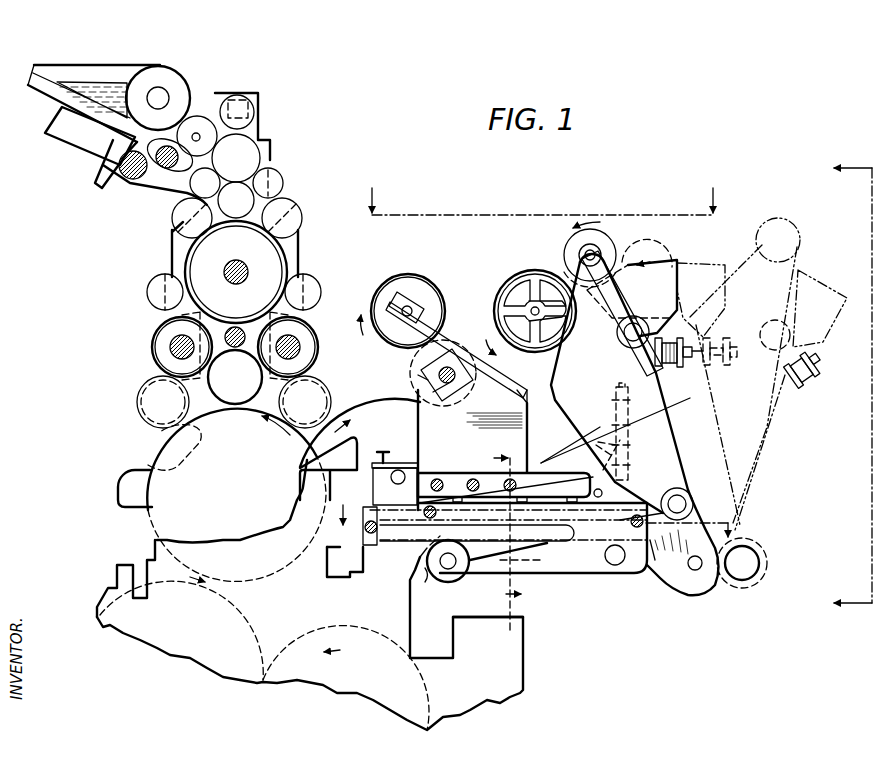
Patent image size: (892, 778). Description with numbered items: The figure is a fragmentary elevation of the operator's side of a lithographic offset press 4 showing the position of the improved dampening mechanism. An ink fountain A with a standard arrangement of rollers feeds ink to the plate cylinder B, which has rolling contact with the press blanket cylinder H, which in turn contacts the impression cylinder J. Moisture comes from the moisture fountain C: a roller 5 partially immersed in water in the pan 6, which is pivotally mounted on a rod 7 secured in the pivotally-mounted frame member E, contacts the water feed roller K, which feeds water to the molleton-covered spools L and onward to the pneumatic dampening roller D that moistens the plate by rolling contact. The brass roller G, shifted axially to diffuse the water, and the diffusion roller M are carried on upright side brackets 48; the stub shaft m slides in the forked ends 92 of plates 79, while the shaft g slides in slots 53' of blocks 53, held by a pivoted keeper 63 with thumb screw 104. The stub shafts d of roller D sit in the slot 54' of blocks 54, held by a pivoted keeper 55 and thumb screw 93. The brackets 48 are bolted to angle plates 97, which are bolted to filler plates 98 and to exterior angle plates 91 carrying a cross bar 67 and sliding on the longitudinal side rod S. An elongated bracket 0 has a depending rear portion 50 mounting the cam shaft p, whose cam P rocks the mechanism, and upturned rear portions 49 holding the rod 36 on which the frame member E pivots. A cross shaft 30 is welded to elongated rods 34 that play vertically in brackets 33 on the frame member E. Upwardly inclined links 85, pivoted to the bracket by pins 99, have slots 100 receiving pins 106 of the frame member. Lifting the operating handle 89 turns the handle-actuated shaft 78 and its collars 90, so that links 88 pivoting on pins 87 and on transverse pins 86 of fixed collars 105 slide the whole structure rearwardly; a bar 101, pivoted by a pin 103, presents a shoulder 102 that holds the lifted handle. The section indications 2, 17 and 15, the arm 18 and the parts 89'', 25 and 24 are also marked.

The ink fountain A is at (90, 66).
The lithographic offset press 4 is at (262, 170).
The plate cylinder B is at (150, 455).
The press blanket cylinder H is at (190, 653).
The press impression or printing cylinder J is at (357, 690).
The water pan 6 is at (848, 330).
The section line 2- 2 is at (841, 387).
The cam / section line 17- 17 is at (617, 233).
The section line 15- 15 is at (542, 526).
The diffusion roller M is at (407, 275).
The stub shaft m is at (385, 300).
The forked ends 92 is at (420, 308).
The plates 79 is at (432, 340).
The pivoted keeper 63 is at (433, 352).
The molleton-covered wheels or spools L is at (502, 275).
The wheel arm 18 is at (534, 306).
The brass roller G is at (412, 370).
The thumb screw 104 is at (422, 380).
The blocks 53 is at (454, 381).
The slots 53' is at (439, 405).
The shaft g is at (456, 378).
The upright side brackets 48 is at (527, 403).
The pneumatic dampening roller D is at (365, 402).
The thumb screw 93 is at (383, 448).
The pivoted keeper 55 is at (357, 456).
The slot 54' is at (382, 474).
The blocks 54 is at (381, 486).
The stub shafts d is at (399, 468).
The angle plates 97 is at (452, 472).
The pins 99 is at (437, 508).
The filler plates 98 is at (580, 505).
The bar 101 is at (575, 545).
The longitudinal exterior angle plates 91 is at (590, 573).
The cross bar 67 is at (615, 565).
The elongated longitudinal brackets 0 is at (656, 566).
The depending rear end portion 50 is at (670, 572).
The handle-actuated shaft 78 is at (447, 572).
The pins 87 is at (465, 575).
The links 88 is at (422, 552).
The link 89'' is at (508, 559).
The operating handle 89 is at (526, 577).
The collars 90 is at (510, 600).
The longitudinal side rod S is at (392, 547).
The shoulder 102 is at (425, 582).
The fixed collars 105 is at (370, 551).
The transverse pins 86 is at (327, 556).
The cross shaft 30 is at (665, 462).
The water feed roller K is at (573, 247).
The roller 5 is at (647, 260).
The rod 7 is at (625, 335).
The moisture fountain C is at (678, 270).
The adjusting screw 25 is at (682, 366).
The screw stem 24 is at (703, 362).
The pivotally-mounted frame member E is at (667, 443).
The brackets 33 is at (648, 435).
The upwardly inclined links 85 is at (552, 462).
The elongated rods 34 is at (630, 458).
The slots 100 is at (624, 420).
The pins 106 is at (596, 440).
The pin 103 is at (640, 515).
The rod 36 is at (683, 495).
The upwardly-directed rear end portions 49 is at (688, 502).
The cam shaft p is at (695, 570).
The cam P is at (760, 558).